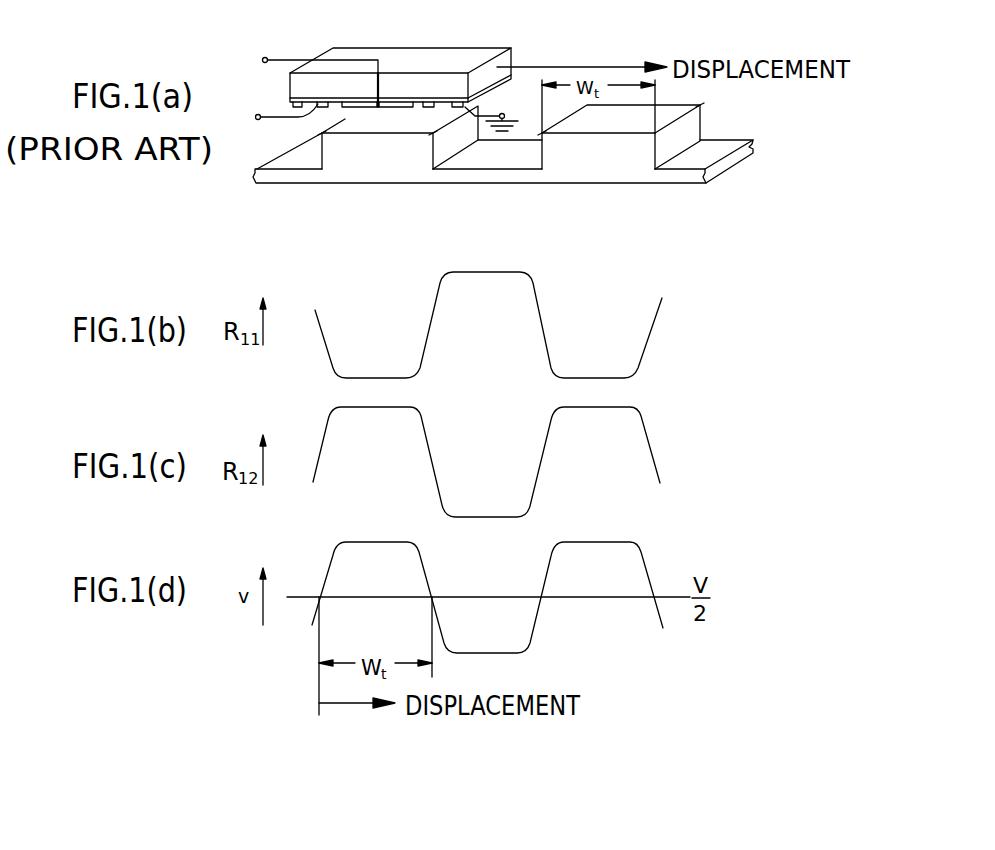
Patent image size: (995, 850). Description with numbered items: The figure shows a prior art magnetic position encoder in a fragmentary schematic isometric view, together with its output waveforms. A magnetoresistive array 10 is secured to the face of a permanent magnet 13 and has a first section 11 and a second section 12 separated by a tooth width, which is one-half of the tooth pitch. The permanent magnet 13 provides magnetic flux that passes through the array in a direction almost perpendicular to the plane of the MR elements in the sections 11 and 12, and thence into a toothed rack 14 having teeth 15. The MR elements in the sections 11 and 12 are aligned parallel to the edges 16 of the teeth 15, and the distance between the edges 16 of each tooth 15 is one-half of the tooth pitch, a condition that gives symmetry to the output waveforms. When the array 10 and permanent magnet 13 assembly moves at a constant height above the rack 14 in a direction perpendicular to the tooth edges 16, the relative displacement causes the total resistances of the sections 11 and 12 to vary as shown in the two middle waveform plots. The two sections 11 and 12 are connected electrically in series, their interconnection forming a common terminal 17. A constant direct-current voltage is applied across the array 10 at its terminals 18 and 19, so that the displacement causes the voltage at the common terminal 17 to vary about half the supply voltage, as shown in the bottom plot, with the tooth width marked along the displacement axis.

The magnetoresistive (MR) array 10 is at (298, 122).
The first section 11 is at (357, 109).
The second section 12 is at (430, 108).
The permanent magnet 13 is at (333, 54).
The toothed rack 14 is at (623, 171).
The teeth 15 is at (387, 170).
The edges 16 is at (331, 123).
The common terminal 17 is at (306, 65).
The terminal 18 is at (275, 112).
The terminal 19 is at (491, 111).